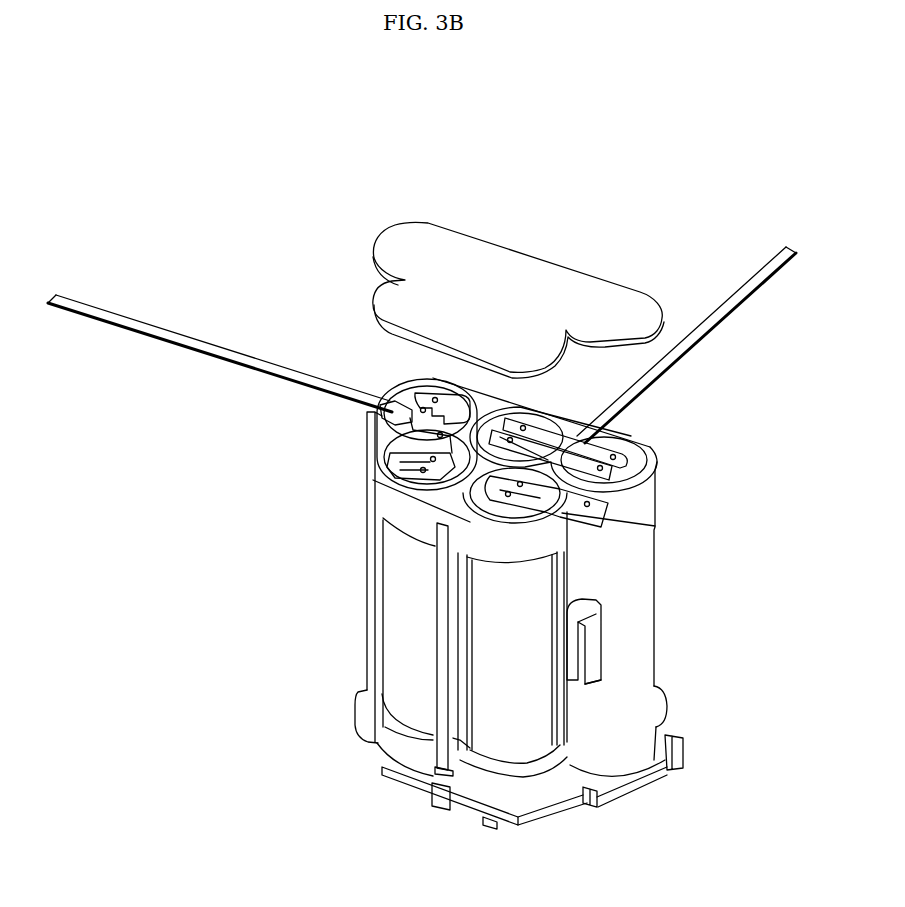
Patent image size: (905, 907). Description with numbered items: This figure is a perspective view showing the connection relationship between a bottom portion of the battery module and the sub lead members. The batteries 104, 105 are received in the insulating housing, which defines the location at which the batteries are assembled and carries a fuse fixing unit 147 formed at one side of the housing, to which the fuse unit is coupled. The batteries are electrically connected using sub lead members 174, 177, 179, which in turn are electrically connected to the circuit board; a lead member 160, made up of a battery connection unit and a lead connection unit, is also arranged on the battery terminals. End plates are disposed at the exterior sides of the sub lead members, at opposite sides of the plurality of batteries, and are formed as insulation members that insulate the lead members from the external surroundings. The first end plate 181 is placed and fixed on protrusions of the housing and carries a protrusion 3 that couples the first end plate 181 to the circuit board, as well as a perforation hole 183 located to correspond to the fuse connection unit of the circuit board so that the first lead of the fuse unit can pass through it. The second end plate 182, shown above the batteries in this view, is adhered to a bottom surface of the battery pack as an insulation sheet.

The protrusion 3 is at (483, 822).
The battery 104 is at (397, 590).
The battery 105 is at (537, 703).
The fuse fixing unit 147 is at (594, 637).
The lead member 160 is at (596, 520).
The sub lead member 174 is at (445, 797).
The sub lead member 177 is at (761, 273).
The sub lead member 179 is at (117, 318).
The first end plate 181 is at (627, 777).
The second end plate 182 is at (488, 252).
The perforation hole 183 is at (594, 803).